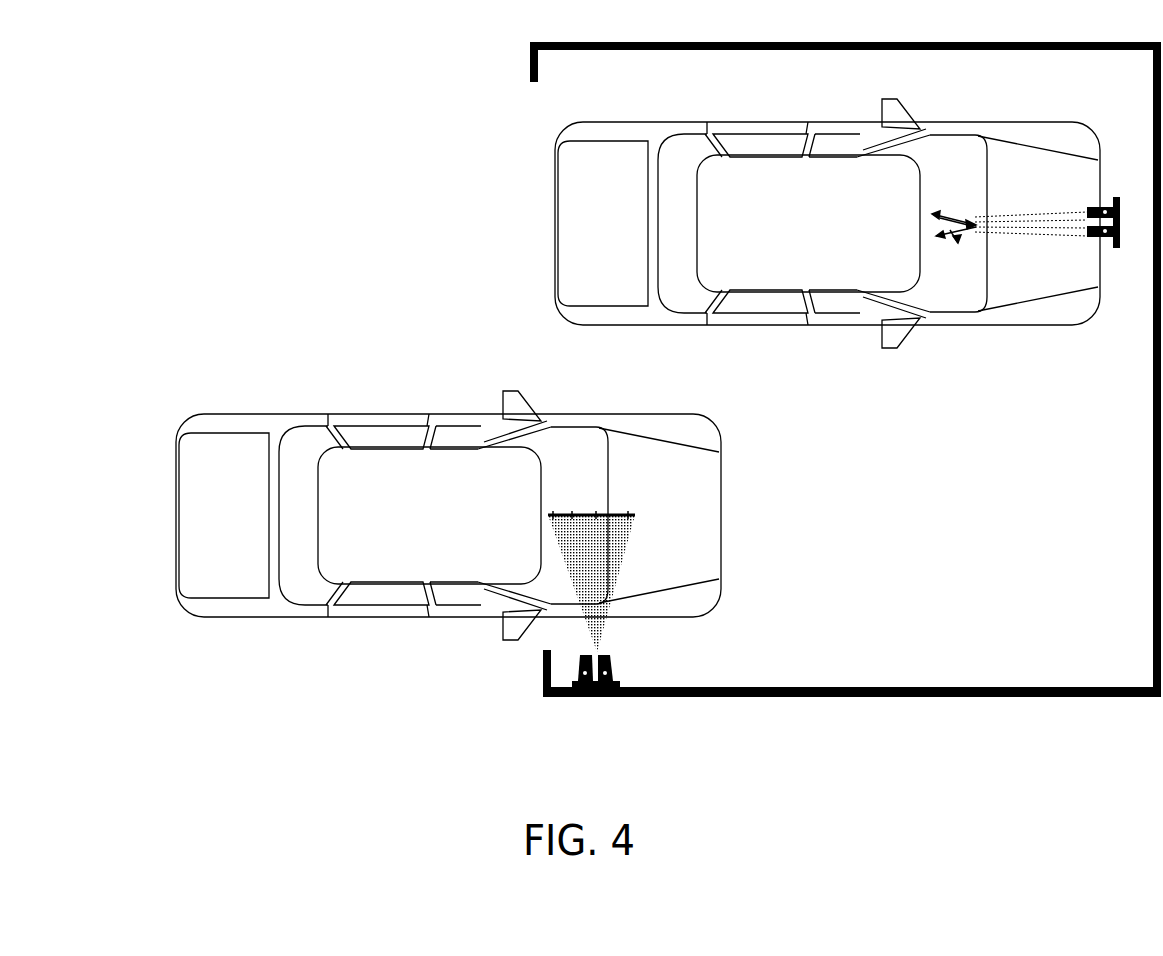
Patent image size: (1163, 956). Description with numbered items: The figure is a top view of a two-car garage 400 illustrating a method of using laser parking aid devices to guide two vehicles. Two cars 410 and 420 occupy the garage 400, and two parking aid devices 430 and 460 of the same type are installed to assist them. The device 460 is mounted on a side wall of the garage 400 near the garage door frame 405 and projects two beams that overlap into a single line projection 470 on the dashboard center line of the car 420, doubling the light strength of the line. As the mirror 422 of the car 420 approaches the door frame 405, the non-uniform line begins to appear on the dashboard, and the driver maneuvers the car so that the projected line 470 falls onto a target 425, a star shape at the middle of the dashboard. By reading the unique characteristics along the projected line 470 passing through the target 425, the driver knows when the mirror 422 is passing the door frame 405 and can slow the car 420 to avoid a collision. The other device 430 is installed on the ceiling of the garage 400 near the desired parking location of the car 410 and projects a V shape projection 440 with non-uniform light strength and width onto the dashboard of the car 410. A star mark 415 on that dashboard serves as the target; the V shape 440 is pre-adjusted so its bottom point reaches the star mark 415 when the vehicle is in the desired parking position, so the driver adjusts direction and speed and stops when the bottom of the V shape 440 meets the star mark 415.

The two-car garage 400 is at (598, 50).
The garage door frame 405 is at (543, 666).
The car 410 is at (772, 122).
The star mark 415 is at (937, 223).
The car 420 is at (406, 413).
The mirror 422 is at (508, 636).
The target 425 is at (571, 505).
The parking aid device 430 is at (1109, 250).
The V shape projection 440 is at (959, 240).
The parking aid device 460 is at (615, 671).
The single line projection 470 is at (627, 507).